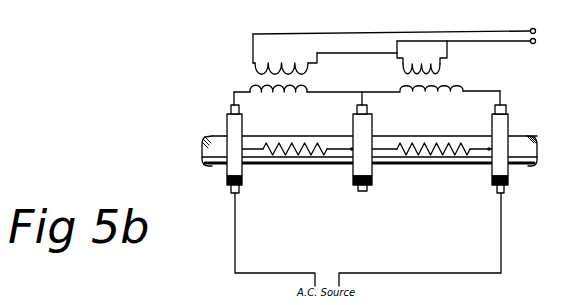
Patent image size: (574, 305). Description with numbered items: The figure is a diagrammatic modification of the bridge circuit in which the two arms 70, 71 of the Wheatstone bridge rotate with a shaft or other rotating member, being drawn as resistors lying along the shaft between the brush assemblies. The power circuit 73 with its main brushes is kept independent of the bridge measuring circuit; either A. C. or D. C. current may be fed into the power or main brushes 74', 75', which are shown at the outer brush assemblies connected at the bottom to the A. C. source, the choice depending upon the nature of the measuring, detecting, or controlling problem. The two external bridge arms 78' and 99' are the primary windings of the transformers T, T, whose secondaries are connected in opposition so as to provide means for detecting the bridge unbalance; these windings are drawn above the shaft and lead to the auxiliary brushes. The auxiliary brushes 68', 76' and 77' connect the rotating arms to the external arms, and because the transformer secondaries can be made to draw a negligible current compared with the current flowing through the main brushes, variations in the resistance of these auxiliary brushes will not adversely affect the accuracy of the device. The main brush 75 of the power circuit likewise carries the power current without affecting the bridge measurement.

The main brush 75 is at (266, 56).
The power circuit 73 is at (472, 78).
The auxiliary brush 76' is at (218, 138).
The external bridge arm 78' is at (317, 102).
The auxiliary brush 68' is at (374, 141).
The secondary winding 99' is at (450, 103).
The auxiliary brush 77' is at (518, 138).
The arm of the bridge 70 is at (308, 153).
The arm of the bridge 71 is at (436, 153).
The main brush 75' is at (273, 235).
The main brush 74' is at (438, 235).